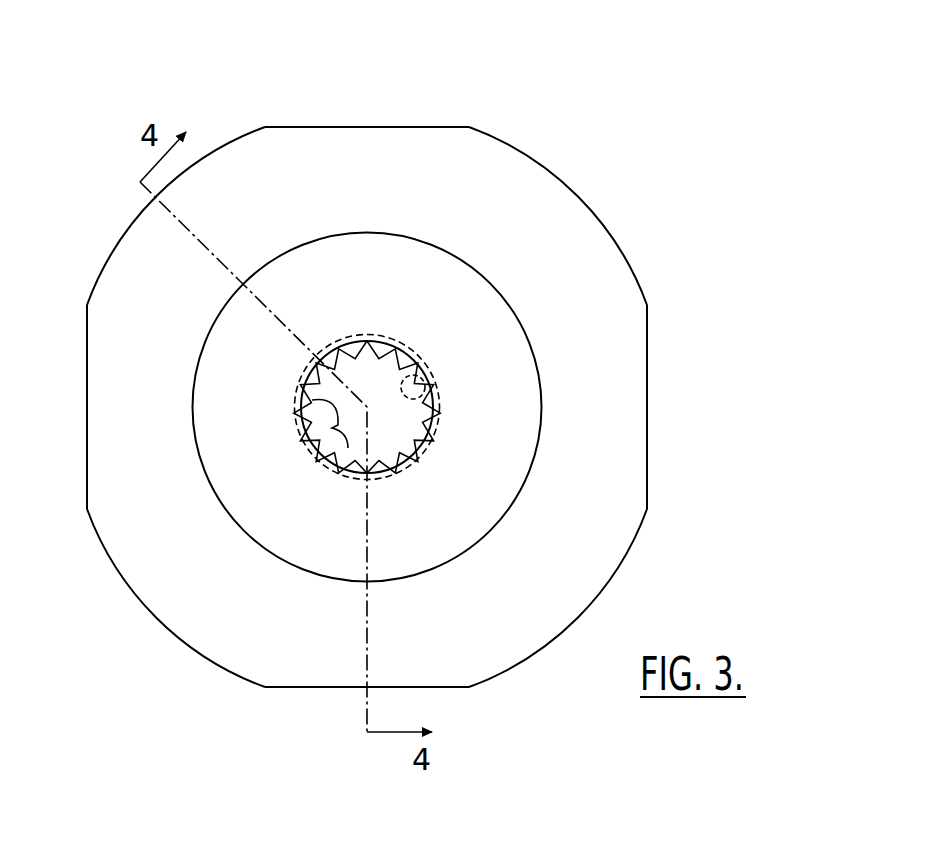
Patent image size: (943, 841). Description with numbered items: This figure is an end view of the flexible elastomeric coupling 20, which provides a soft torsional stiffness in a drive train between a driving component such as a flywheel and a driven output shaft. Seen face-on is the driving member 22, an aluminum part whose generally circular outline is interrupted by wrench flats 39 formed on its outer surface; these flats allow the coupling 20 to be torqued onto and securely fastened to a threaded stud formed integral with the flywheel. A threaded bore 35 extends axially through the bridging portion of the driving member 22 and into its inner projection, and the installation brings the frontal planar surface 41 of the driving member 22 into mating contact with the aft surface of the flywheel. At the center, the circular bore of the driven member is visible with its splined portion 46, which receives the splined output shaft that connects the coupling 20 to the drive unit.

The flexible elastomeric coupling 20 is at (378, 391).
The driving member 22 is at (591, 258).
The threaded bore 35 is at (437, 397).
The wrench flats 39 is at (438, 128).
The frontal planar surface 41 is at (447, 287).
The splined portion 46 is at (308, 401).